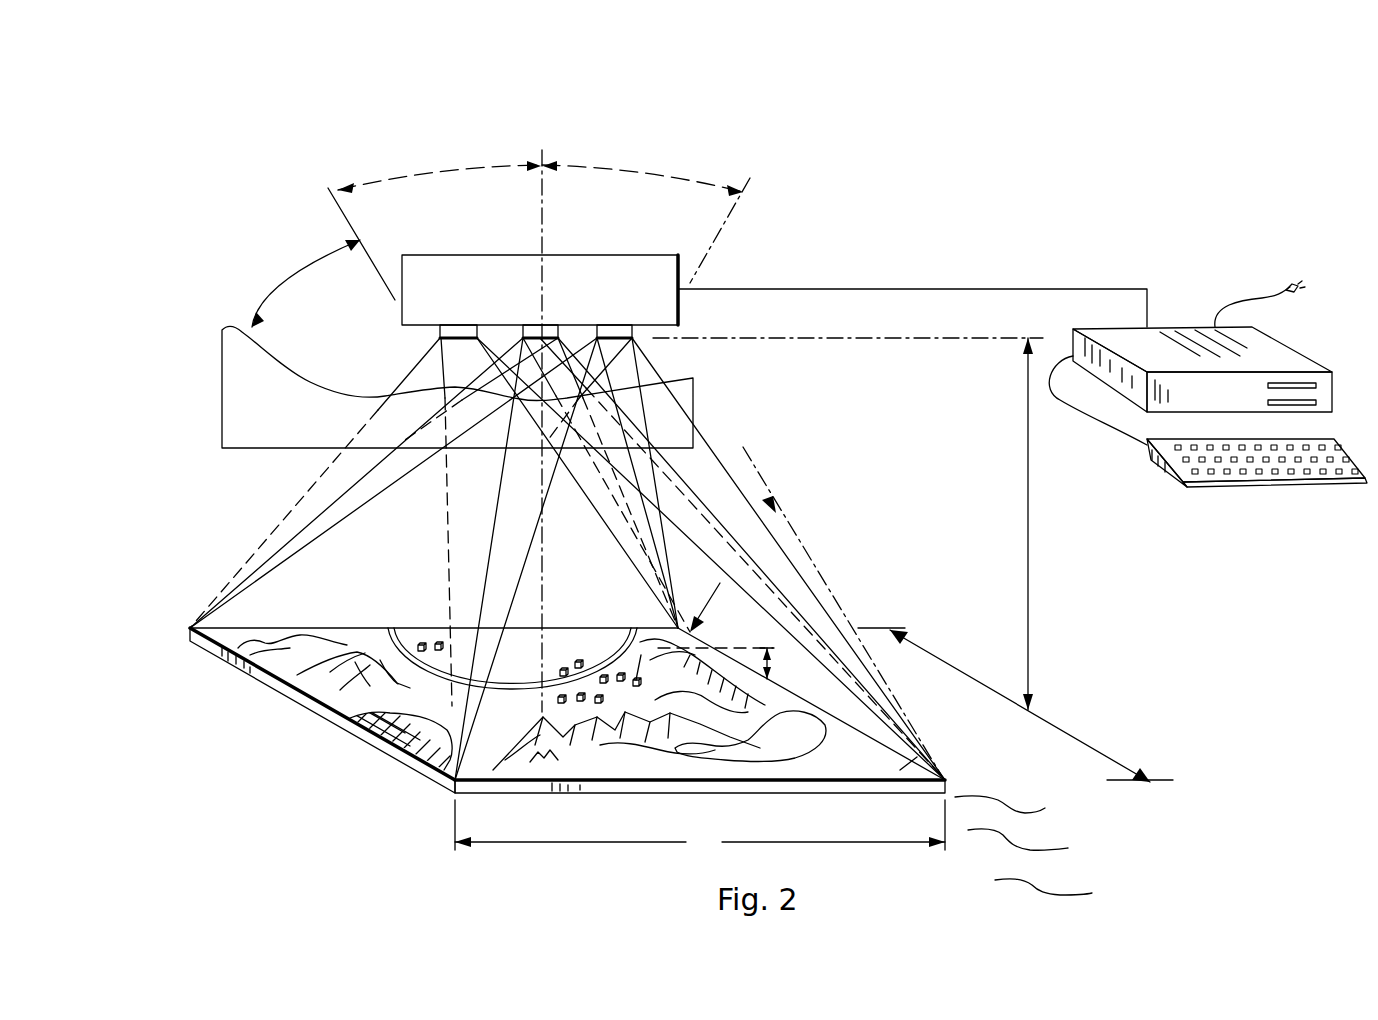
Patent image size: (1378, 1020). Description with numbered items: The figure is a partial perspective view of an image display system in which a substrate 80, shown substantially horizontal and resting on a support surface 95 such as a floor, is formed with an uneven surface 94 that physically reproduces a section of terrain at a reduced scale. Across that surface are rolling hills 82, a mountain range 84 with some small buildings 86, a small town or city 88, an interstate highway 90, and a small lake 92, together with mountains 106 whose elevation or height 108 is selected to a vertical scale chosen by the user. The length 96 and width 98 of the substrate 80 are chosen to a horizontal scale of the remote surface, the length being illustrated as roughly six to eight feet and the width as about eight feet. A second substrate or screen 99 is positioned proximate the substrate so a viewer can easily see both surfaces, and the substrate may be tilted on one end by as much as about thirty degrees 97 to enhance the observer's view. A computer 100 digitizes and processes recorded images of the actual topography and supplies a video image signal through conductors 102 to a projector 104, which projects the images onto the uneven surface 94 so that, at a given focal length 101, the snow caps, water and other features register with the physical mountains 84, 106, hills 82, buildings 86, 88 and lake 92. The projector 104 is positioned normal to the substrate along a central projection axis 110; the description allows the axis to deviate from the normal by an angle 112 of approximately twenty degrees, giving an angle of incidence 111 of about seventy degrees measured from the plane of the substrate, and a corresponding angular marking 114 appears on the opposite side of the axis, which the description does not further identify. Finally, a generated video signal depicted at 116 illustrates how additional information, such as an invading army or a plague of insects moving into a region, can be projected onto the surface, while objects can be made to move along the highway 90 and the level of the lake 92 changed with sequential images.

The substrate 80 is at (312, 708).
The rolling hills 82 is at (305, 633).
The mountain range 84 is at (537, 780).
The small buildings 86 is at (418, 640).
The small town or city 88 is at (562, 665).
The interstate highway 90 is at (605, 650).
The small lake 92 is at (783, 750).
The uneven surface 94 is at (900, 770).
The support surface 95 is at (1077, 878).
The length 96 is at (1050, 720).
The tilt angle of about 30 degrees 97 is at (773, 508).
The width 98 is at (700, 827).
The second substrate or screen 99 is at (700, 393).
The computer 100 is at (1300, 345).
The focal length 101 is at (1028, 525).
The conductors 102 is at (960, 289).
The projector 104 is at (630, 255).
The mountains 106 is at (695, 640).
The elevation or height 108 is at (770, 668).
The central projection axis 110 is at (545, 235).
The angle of incidence 111 is at (280, 292).
The angle of about 20 degrees 112 is at (440, 172).
The 20 degree angle right 114 is at (675, 180).
The video signal image 116 is at (373, 743).